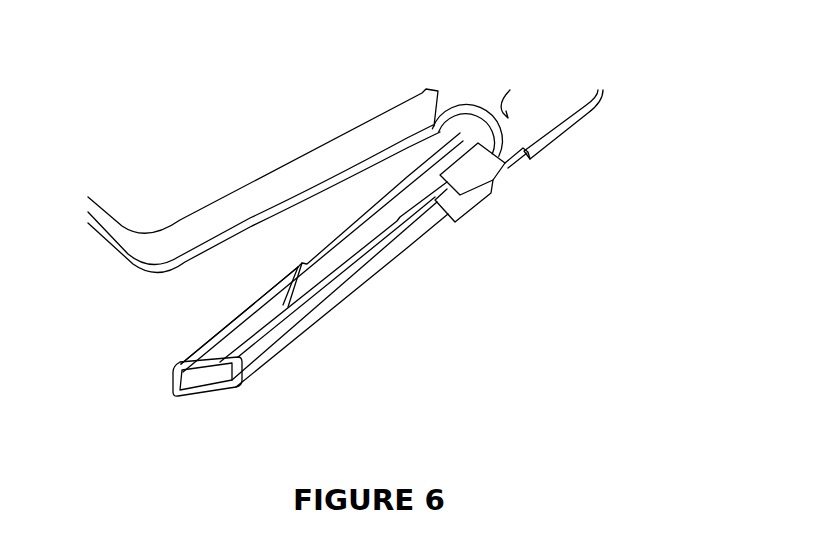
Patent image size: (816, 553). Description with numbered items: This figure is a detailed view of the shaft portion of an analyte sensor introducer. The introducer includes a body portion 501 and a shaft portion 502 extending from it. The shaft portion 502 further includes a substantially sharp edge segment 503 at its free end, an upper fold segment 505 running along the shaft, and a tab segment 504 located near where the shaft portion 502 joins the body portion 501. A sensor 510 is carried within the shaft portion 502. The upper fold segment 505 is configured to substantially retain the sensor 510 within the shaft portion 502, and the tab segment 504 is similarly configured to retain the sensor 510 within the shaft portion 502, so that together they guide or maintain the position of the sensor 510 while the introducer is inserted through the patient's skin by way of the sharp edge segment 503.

The body portion 501 is at (558, 146).
The shaft portion 502 is at (348, 290).
The substantially sharp edge segment 503 is at (212, 383).
The tab segment 504 is at (500, 178).
The upper fold segment 505 is at (217, 338).
The sensor 510 is at (266, 180).